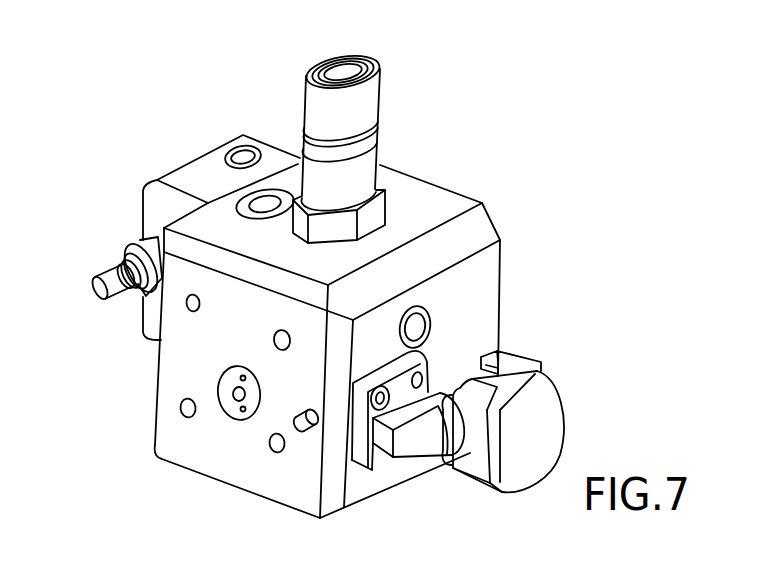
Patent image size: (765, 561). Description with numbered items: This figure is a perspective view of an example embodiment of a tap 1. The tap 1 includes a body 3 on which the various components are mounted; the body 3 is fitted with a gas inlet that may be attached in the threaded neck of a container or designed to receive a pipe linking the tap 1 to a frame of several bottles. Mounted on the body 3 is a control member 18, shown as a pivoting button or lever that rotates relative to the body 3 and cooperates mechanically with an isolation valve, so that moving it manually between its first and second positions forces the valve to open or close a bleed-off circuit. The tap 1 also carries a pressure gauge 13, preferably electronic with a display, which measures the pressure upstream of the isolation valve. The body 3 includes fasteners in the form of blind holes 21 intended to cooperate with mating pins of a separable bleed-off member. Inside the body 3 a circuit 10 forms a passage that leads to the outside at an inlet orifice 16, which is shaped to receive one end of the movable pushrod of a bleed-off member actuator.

The tap 1 is at (515, 192).
The body 3 is at (500, 272).
The circuit 10 is at (348, 64).
The pressure gauge 13 is at (535, 418).
The inlet orifice 16 is at (236, 393).
The control member 18 is at (430, 433).
The blind holes 21 is at (187, 306).